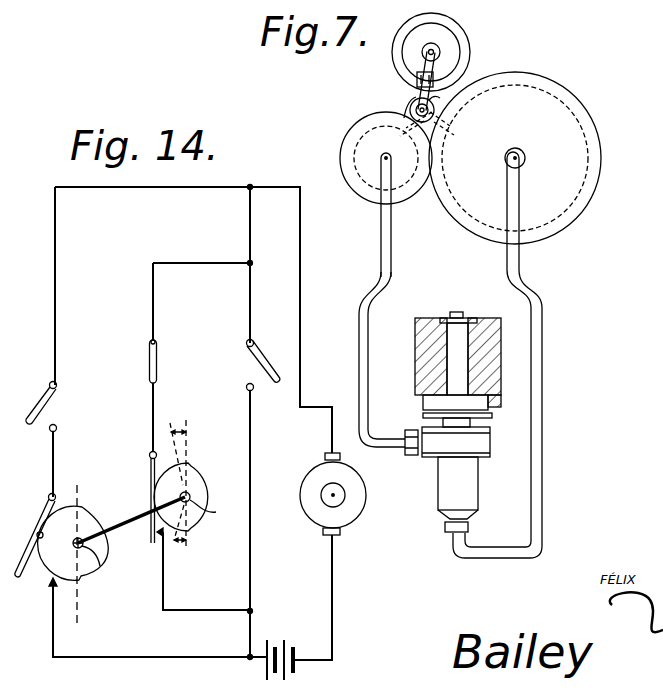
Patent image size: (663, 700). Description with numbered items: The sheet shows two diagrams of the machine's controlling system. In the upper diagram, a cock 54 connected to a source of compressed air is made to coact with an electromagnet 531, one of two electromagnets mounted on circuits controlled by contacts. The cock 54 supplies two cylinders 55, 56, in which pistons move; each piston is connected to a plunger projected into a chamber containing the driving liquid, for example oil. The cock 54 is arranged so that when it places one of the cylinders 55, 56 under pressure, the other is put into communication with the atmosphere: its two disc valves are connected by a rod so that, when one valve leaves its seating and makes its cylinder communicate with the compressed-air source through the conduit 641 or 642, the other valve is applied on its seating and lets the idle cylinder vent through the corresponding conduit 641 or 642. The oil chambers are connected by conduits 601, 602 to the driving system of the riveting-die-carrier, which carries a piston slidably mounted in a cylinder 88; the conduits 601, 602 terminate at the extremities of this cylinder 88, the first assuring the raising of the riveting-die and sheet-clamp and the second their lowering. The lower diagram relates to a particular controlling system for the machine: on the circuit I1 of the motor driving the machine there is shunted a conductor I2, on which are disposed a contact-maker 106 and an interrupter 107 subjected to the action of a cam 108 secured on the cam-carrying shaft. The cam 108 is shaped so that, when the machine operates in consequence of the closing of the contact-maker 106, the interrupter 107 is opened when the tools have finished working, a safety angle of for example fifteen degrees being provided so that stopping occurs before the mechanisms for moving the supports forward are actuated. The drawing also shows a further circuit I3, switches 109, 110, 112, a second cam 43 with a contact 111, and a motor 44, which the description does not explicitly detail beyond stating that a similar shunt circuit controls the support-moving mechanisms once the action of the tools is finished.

In FIG. 7, the electromagnet 531 is at (448, 42).
In FIG. 7, the cock 54 is at (414, 103).
In FIG. 7, the conduit 642 is at (409, 132).
In FIG. 7, the conduit 641 is at (433, 115).
In FIG. 7, the cylinder 56 is at (351, 157).
In FIG. 7, the cylinder 55 is at (580, 172).
In FIG. 7, the conduit 602 is at (363, 369).
In FIG. 7, the conduit 601 is at (536, 330).
In FIG. 7, the cylinder 88 is at (443, 490).
In FIG. 14, the circuit I3 is at (55, 272).
In FIG. 14, the conductor I2 is at (153, 296).
In FIG. 14, the circuit of the motor I1 is at (252, 284).
In FIG. 14, the switch 109 is at (48, 382).
In FIG. 14, the contact-maker 106 is at (148, 366).
In FIG. 14, the switch 112 is at (257, 345).
In FIG. 14, the interrupter 107 is at (156, 490).
In FIG. 14, the cam 108 is at (210, 482).
In FIG. 14, the cam 43 is at (207, 527).
In FIG. 14, the contact 111 is at (80, 578).
In FIG. 14, the switch 110 is at (40, 531).
In FIG. 14, the motor 44 is at (356, 512).